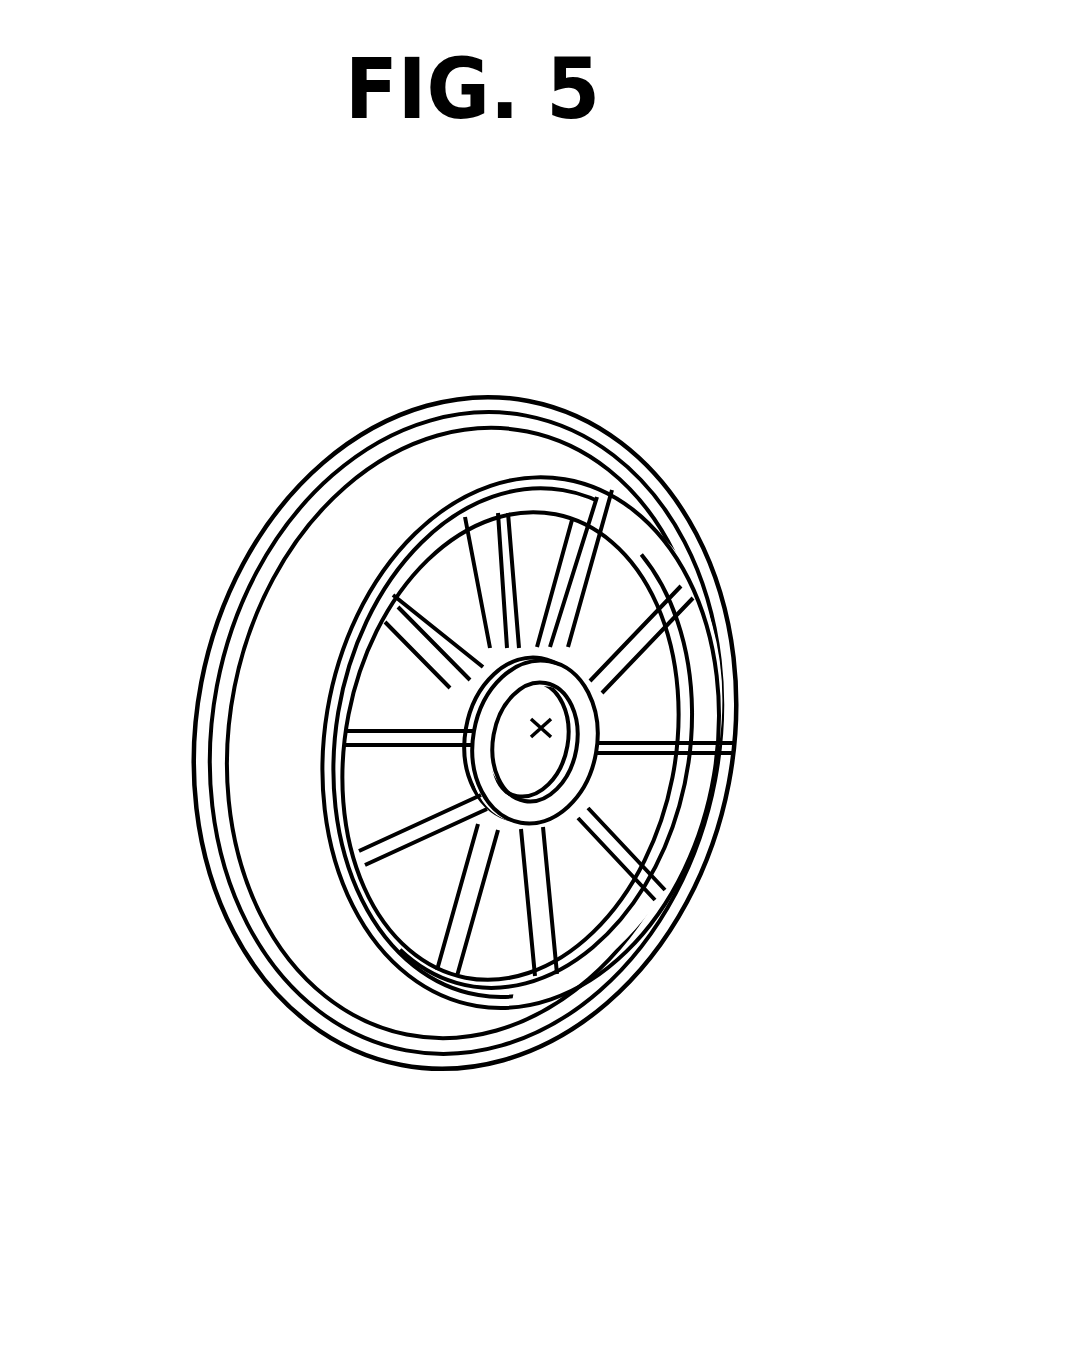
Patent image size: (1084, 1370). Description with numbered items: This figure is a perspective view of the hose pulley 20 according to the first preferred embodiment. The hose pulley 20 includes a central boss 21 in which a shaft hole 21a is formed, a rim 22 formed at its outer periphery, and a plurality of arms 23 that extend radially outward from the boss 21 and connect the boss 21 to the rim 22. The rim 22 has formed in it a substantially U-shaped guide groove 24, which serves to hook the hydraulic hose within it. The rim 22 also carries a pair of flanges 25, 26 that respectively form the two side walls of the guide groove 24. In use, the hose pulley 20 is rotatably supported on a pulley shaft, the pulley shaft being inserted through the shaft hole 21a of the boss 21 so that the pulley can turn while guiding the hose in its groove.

The hose pulley 20 is at (670, 352).
The boss 21 is at (462, 757).
The shaft hole 21a is at (548, 728).
The rim 22 is at (444, 1084).
The arms 23 is at (482, 503).
The guide groove 24 is at (280, 693).
The flange 25 is at (300, 1030).
The flange 26 is at (498, 1010).